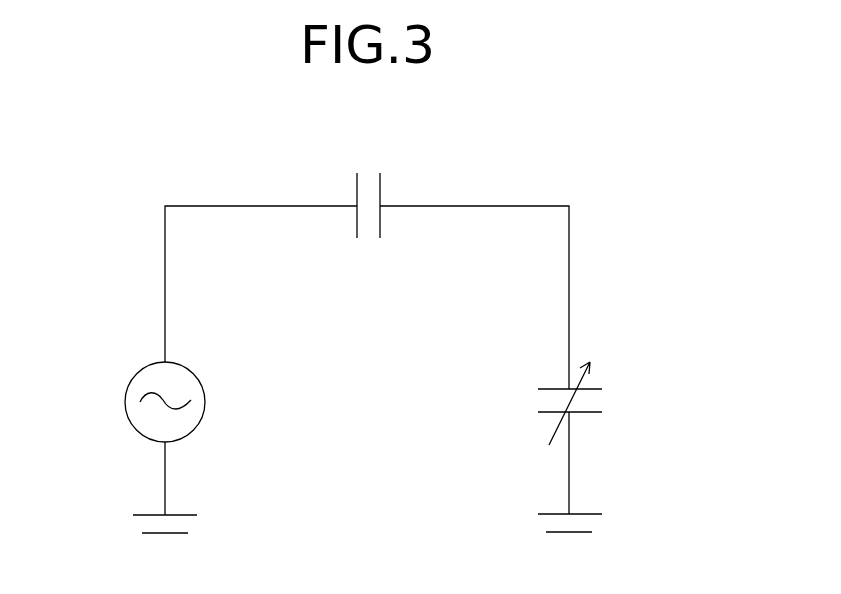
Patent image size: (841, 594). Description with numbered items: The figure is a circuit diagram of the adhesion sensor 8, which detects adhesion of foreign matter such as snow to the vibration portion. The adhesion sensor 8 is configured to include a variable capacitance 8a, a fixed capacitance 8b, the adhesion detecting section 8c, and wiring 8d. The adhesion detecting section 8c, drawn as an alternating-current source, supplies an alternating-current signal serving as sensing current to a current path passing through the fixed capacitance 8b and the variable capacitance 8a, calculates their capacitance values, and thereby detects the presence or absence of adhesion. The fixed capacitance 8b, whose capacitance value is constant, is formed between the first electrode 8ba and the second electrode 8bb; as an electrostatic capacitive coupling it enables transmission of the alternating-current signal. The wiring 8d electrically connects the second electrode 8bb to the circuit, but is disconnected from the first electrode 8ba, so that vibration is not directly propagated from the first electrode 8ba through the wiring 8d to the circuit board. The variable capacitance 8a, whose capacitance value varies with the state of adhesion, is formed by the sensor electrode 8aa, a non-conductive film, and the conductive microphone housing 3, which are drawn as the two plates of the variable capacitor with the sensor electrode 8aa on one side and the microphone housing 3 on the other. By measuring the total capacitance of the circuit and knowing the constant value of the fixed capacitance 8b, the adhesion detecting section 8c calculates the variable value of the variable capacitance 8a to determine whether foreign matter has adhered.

The adhesion sensor 8 is at (494, 176).
The wiring 8d is at (200, 206).
The adhesion detecting section 8c is at (125, 398).
The fixed capacitance 8b is at (368, 243).
The second electrode 8bb is at (357, 217).
The first electrode 8ba is at (380, 217).
The variable capacitance 8a is at (605, 397).
The sensor electrode 8aa is at (548, 388).
The microphone housing 3 is at (545, 415).